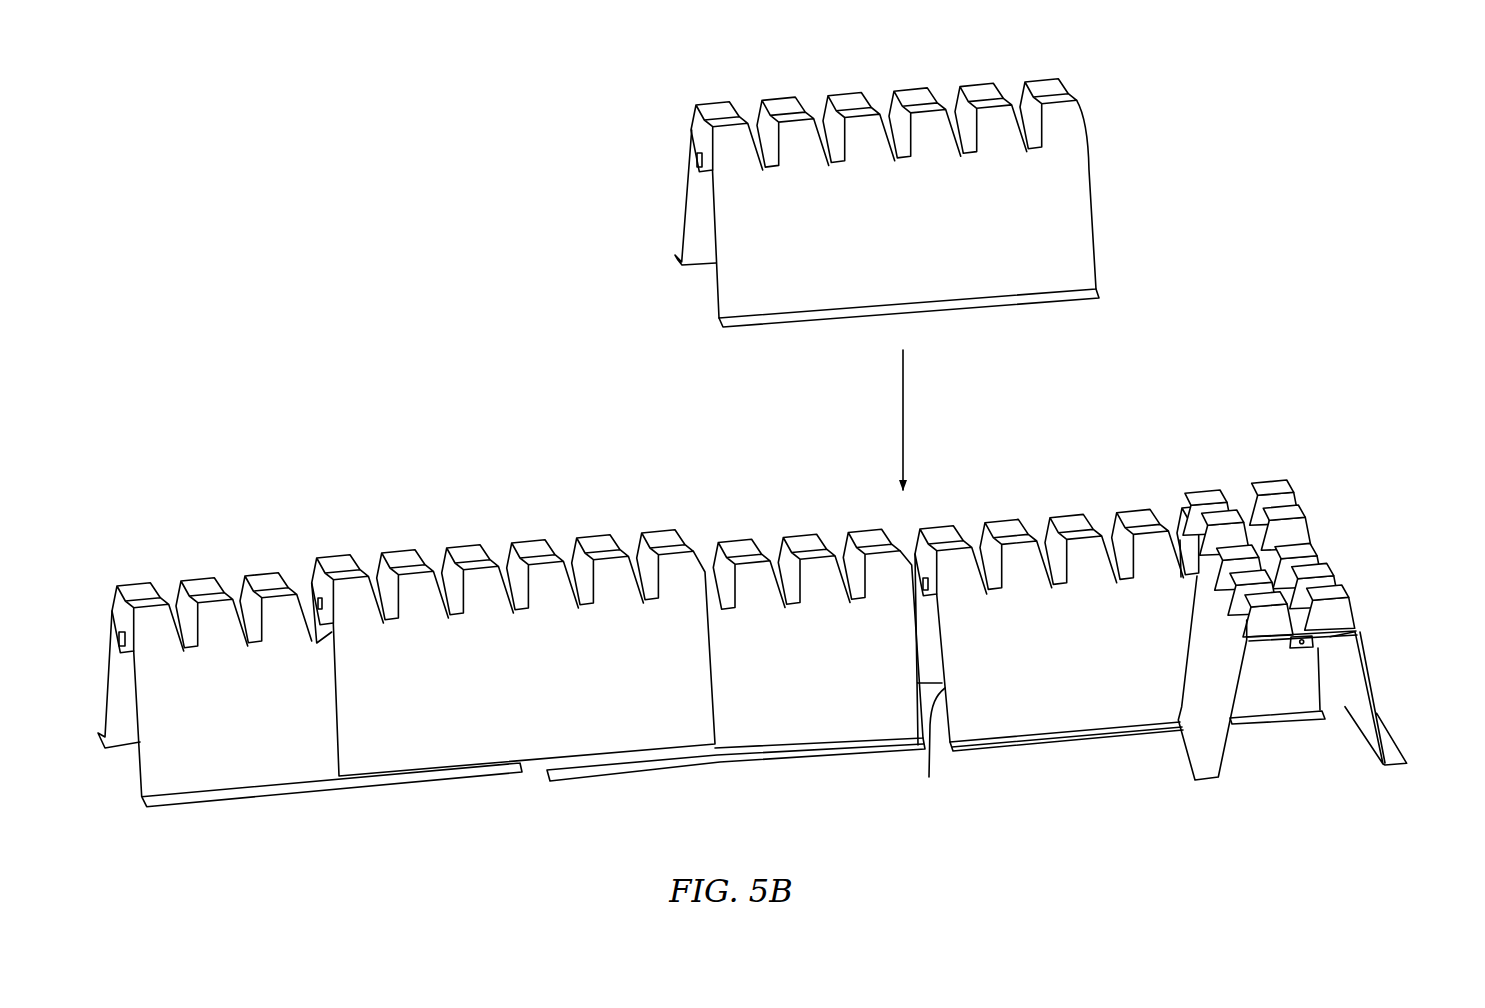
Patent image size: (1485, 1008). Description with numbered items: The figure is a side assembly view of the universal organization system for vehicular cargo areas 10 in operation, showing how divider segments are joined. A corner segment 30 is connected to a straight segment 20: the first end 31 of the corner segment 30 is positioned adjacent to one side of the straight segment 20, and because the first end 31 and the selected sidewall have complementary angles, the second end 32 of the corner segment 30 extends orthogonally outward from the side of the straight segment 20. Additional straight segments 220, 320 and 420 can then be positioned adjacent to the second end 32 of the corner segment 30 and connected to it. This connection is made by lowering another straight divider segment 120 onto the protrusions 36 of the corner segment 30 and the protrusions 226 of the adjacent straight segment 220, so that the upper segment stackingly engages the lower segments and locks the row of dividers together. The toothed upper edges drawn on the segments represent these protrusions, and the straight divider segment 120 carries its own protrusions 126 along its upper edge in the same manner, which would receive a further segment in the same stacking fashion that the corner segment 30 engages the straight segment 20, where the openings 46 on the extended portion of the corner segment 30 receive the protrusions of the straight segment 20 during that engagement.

The universal organization system for vehicular cargo areas 10 is at (336, 143).
The straight divider segment 120 is at (941, 174).
The teeth of top fin panel 126 is at (868, 122).
The straight segment 420 is at (215, 560).
The straight segment 320 is at (472, 535).
The straight segment 220 is at (736, 661).
The protrusions 226 is at (818, 562).
The corner segment 30 is at (1071, 648).
The protrusions 36 is at (1082, 540).
The second end of the corner segment 32 is at (927, 756).
The first end of the corner segment 31 is at (1212, 722).
The straight segment 20 is at (1325, 596).
The teeth of end bracket 46 is at (1258, 490).